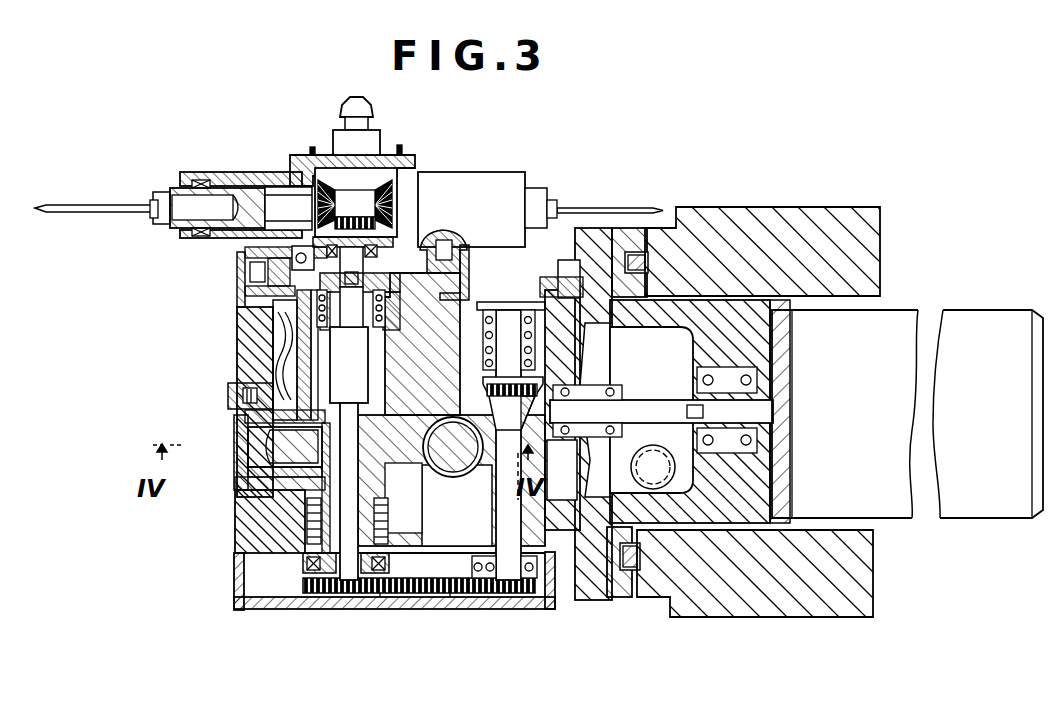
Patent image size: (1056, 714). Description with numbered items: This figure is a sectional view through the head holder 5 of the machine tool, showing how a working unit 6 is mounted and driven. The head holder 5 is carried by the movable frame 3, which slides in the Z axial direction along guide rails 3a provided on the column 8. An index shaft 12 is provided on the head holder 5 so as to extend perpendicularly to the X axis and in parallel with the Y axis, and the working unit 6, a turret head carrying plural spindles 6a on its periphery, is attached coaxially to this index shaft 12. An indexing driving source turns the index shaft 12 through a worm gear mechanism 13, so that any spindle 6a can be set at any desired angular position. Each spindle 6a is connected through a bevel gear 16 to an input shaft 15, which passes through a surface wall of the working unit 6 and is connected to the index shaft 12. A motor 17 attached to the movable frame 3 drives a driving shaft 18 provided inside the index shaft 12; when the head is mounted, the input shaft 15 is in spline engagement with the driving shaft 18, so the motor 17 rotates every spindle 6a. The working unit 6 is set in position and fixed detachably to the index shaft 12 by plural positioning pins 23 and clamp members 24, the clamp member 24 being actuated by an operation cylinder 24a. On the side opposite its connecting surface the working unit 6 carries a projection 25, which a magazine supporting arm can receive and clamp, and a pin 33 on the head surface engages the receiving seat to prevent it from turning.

The movable frame 3 is at (580, 600).
The guide rails 3a is at (628, 228).
The head holder 5 is at (236, 527).
The working unit 6 is at (447, 180).
The spindle 6a is at (97, 205).
The column 8 is at (780, 618).
The index shaft 12 is at (322, 362).
The worm gear mechanism 13 is at (433, 483).
The input shaft 15 is at (386, 262).
The bevel gear 16 is at (336, 192).
The motor 17 is at (984, 316).
The driving shaft 18 is at (253, 364).
The positioning pin 23 is at (458, 240).
The clamp member 24 is at (238, 262).
The operation cylinder 24a is at (248, 232).
The projection 25 is at (356, 101).
The pin 33 is at (312, 147).